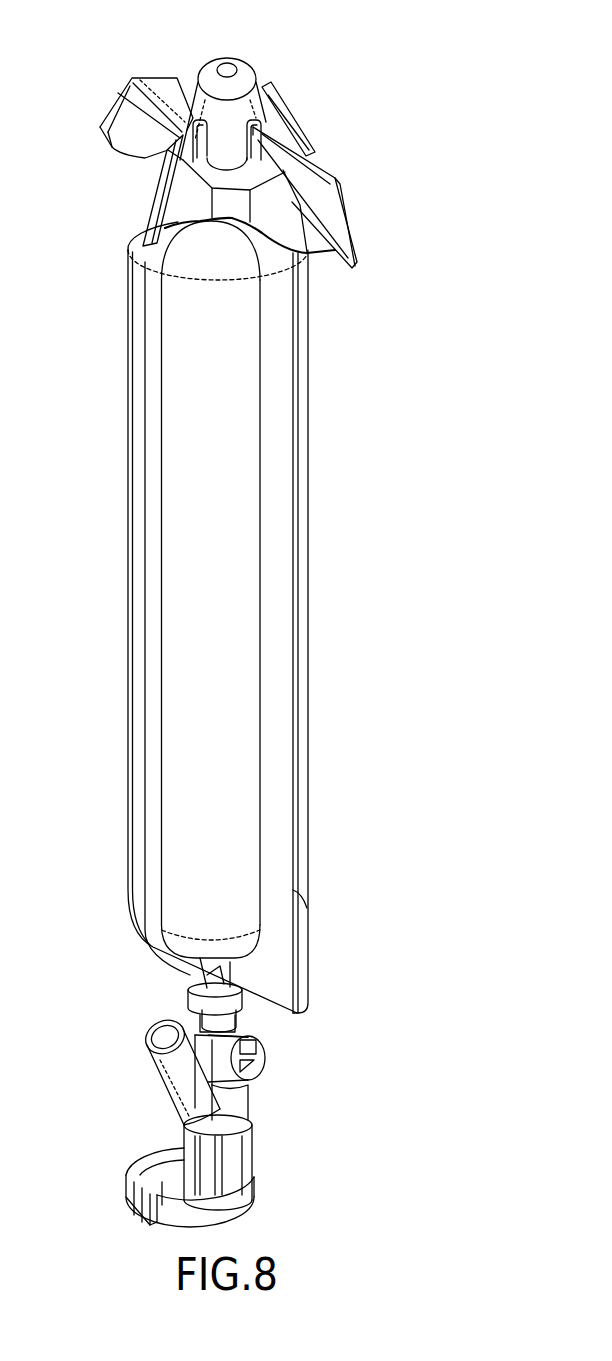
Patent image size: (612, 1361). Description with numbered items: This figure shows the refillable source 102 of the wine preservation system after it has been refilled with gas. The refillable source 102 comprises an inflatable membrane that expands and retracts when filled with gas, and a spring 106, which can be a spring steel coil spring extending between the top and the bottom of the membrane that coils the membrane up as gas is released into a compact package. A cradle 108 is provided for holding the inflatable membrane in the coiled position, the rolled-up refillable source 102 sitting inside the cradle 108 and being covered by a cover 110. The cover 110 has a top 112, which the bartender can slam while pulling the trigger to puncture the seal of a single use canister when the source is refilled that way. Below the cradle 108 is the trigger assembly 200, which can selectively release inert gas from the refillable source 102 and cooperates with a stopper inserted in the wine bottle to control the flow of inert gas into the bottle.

The refillable source 102 is at (235, 602).
The spring 106 is at (157, 866).
The cradle 108 is at (205, 996).
The cover 110 is at (310, 177).
The top 112 is at (227, 70).
The trigger assembly 200 is at (302, 1033).